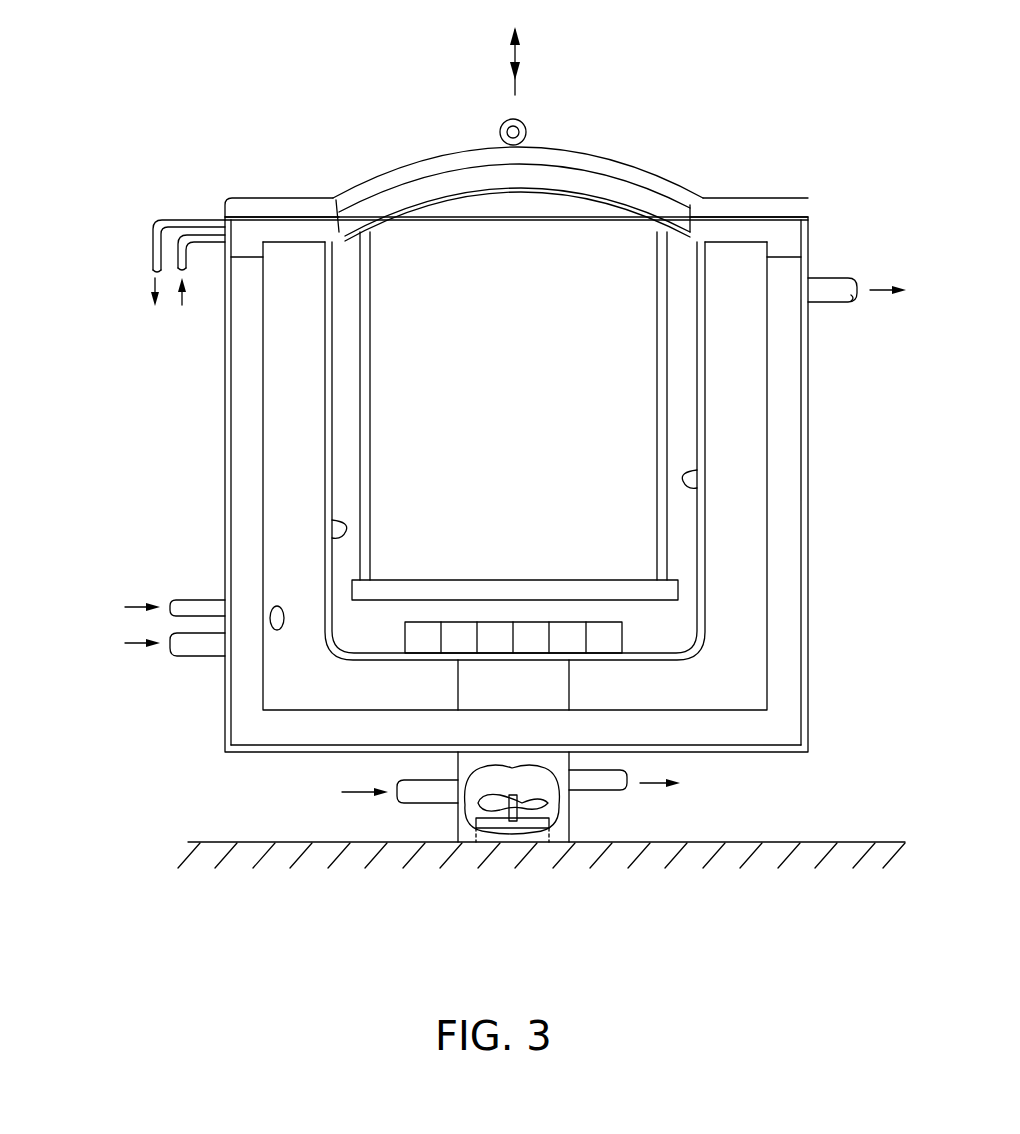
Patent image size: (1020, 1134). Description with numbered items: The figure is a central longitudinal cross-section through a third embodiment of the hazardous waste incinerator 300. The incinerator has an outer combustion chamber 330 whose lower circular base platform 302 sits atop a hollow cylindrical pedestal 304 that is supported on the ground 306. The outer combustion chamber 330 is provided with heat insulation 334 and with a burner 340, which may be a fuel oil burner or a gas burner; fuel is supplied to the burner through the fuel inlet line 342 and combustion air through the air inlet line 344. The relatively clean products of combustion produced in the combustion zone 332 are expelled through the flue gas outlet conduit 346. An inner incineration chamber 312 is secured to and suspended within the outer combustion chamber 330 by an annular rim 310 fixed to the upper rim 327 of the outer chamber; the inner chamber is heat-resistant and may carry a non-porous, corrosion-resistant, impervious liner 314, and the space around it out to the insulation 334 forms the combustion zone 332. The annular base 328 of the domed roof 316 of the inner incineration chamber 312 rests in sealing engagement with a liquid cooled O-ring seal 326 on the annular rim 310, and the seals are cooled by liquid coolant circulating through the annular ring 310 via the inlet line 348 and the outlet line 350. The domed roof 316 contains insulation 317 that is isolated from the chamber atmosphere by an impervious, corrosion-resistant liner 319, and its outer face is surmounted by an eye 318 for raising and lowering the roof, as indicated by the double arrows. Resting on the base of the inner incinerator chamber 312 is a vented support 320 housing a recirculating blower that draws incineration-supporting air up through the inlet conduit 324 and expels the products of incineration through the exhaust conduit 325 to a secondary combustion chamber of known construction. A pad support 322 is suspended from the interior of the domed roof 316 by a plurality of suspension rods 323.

The hazardous waste incinerator 300 is at (646, 90).
The lower circular base platform 302 is at (770, 755).
The hollow cylindrical pedestal 304 is at (520, 822).
The ground 306 is at (815, 842).
The annular rim 310 is at (800, 237).
The inner incineration chamber 312 is at (540, 394).
The liner 314 is at (340, 530).
The domed roof 316 is at (410, 142).
The insulation 317 is at (618, 193).
The eye 318 is at (527, 132).
The liner 319 is at (493, 195).
The vented support 320 is at (531, 640).
The pad support 322 is at (415, 580).
The suspension rods 323 is at (375, 306).
The inlet conduit 324 is at (425, 805).
The exhaust conduit 325 is at (595, 790).
The O-ring seal 326 is at (245, 218).
The upper rim 327 is at (800, 256).
The annular base 328 is at (240, 200).
The outer combustion chamber 330 is at (810, 405).
The combustion zone 332 is at (290, 420).
The heat insulation 334 is at (245, 462).
The burner 340 is at (277, 631).
The fuel inlet line 342 is at (210, 600).
The air inlet line 344 is at (210, 658).
The flue gas outlet conduit 346 is at (840, 305).
The inlet line 348 is at (192, 276).
The outlet line 350 is at (150, 256).